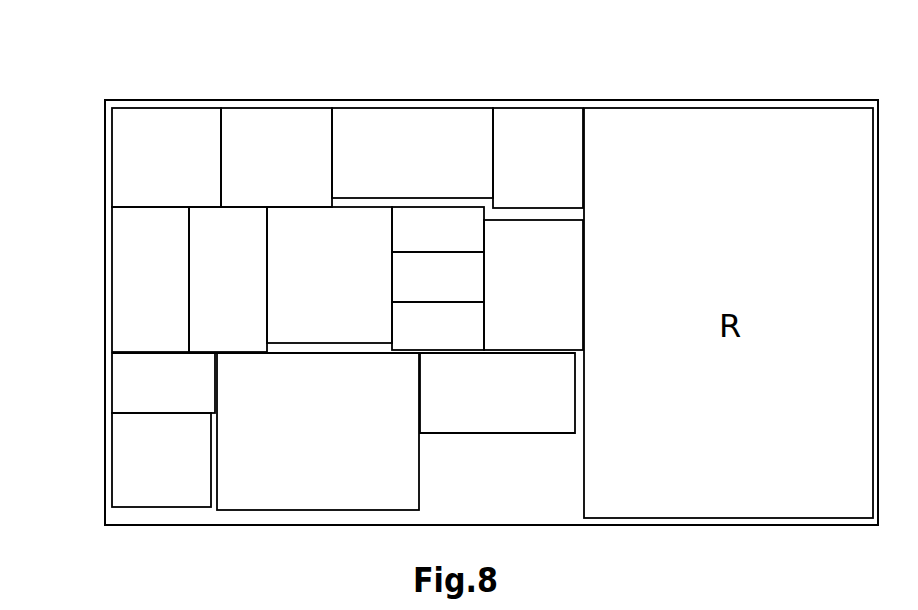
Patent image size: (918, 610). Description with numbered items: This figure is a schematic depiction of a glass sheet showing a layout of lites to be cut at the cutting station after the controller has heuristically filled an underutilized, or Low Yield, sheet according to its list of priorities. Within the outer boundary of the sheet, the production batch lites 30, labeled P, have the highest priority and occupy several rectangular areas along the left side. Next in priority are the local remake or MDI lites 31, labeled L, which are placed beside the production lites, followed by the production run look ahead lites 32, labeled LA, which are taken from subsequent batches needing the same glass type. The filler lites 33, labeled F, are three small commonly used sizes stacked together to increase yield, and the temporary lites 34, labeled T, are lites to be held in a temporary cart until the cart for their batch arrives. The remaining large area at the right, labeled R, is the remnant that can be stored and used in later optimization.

The production batch lites 30 is at (135, 240).
The local remake or MDI lites 31 is at (257, 128).
The production run look ahead lites 32 is at (342, 232).
The filler lites 33 is at (468, 317).
The temporary lites 34 is at (567, 167).